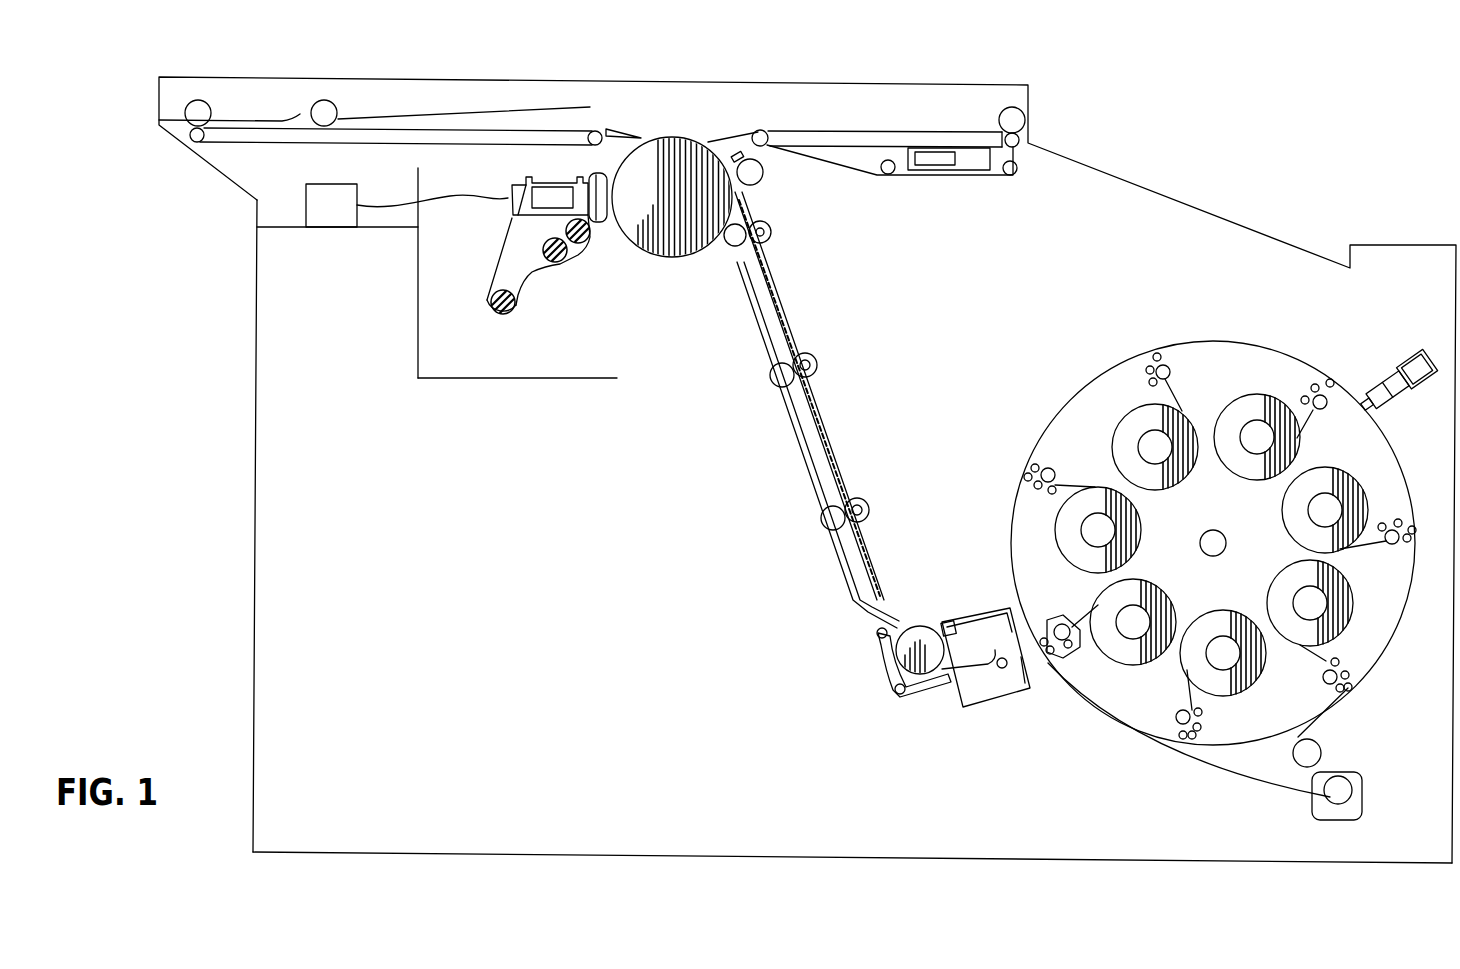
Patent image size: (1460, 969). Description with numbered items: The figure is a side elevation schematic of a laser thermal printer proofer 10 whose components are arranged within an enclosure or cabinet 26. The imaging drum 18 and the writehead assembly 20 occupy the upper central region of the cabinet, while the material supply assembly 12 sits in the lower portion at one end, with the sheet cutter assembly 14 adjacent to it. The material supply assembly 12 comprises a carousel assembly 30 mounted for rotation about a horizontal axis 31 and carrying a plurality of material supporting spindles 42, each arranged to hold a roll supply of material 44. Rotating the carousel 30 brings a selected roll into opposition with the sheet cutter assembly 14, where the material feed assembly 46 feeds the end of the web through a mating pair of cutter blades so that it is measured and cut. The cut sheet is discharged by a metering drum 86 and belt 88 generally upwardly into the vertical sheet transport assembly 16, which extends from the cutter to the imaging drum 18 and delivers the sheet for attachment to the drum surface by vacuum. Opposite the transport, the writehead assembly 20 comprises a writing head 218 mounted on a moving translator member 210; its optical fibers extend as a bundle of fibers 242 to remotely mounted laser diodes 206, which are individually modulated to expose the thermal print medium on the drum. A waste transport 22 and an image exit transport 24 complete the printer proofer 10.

The laser thermal printer proofer 10 is at (660, 70).
The material supply assembly 12 is at (1056, 748).
The sheet cutter assembly 14 is at (955, 606).
The sheet transport assembly 16 is at (843, 440).
The imaging drum 18 is at (652, 251).
The writehead assembly 20 is at (518, 384).
The waste transport 22 is at (431, 108).
The image exit transport 24 is at (812, 100).
The cabinet 26 is at (426, 852).
The carousel assembly 30 is at (1197, 342).
The horizontal axis 31 is at (1204, 537).
The material supporting spindle 42 is at (1140, 450).
The roll supply of material 44 is at (1122, 662).
The material feed assembly 46 is at (1049, 622).
The metering drum 86 is at (917, 633).
The belt 88 is at (930, 690).
The laser diodes 206 is at (331, 205).
The translator member 210 is at (505, 256).
The writing head 218 is at (592, 172).
The bundle of fibers 242 is at (459, 191).